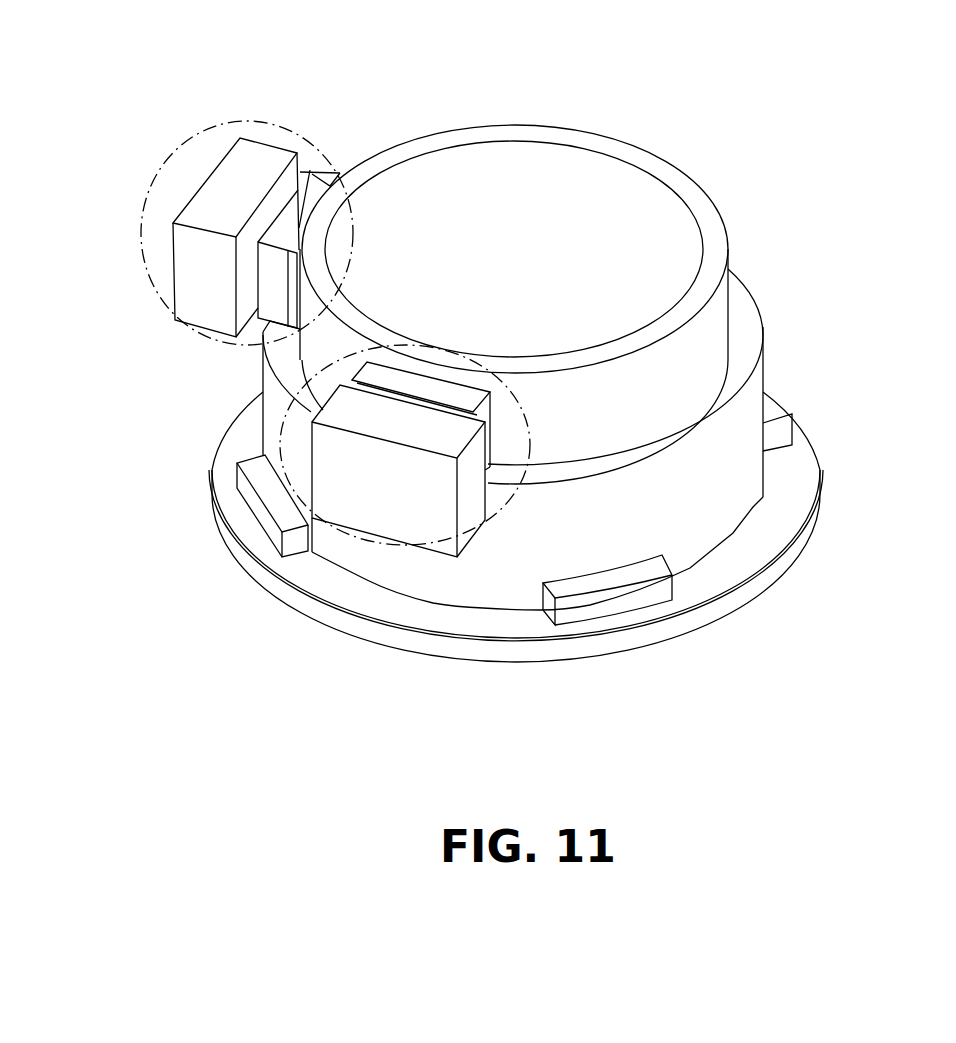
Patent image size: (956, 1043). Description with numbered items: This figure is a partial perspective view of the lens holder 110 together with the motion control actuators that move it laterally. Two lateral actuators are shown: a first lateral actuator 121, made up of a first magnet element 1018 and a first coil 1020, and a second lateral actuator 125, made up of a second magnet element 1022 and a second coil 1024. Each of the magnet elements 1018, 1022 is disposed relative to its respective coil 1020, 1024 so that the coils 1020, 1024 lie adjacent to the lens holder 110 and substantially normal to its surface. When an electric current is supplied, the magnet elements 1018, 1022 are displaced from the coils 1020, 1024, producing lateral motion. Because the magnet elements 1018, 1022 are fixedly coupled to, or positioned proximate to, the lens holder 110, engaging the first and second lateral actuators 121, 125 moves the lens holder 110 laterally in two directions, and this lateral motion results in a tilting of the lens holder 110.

The lens holder 110 is at (700, 187).
The first lateral actuator 121 is at (506, 503).
The second lateral actuator 125 is at (142, 210).
The first magnet element 1018 is at (393, 377).
The first coil 1020 is at (371, 470).
The second magnet element 1022 is at (310, 185).
The second coil 1024 is at (248, 165).